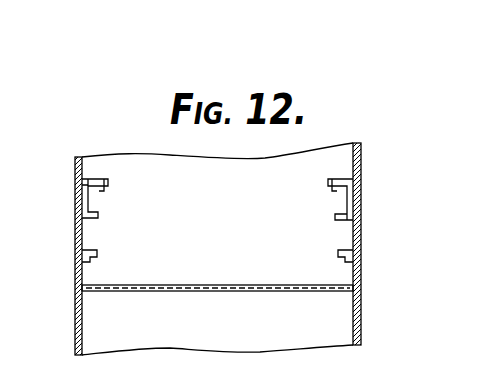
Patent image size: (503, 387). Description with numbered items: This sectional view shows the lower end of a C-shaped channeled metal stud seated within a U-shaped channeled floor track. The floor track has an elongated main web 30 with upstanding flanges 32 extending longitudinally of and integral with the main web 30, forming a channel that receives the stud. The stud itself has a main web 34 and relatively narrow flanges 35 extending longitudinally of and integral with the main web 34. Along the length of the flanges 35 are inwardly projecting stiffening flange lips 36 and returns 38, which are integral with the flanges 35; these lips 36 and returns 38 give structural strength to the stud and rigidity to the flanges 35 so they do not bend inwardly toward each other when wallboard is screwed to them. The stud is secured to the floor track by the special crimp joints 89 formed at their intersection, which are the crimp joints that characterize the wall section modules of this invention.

The main web 30 is at (231, 336).
The upstanding flanges 32 is at (75, 328).
The main web 34 is at (188, 286).
The flanges 35 is at (85, 273).
The stiffening flange lips 36 is at (98, 180).
The returns 38 is at (99, 190).
The crimp joints 89 is at (100, 224).